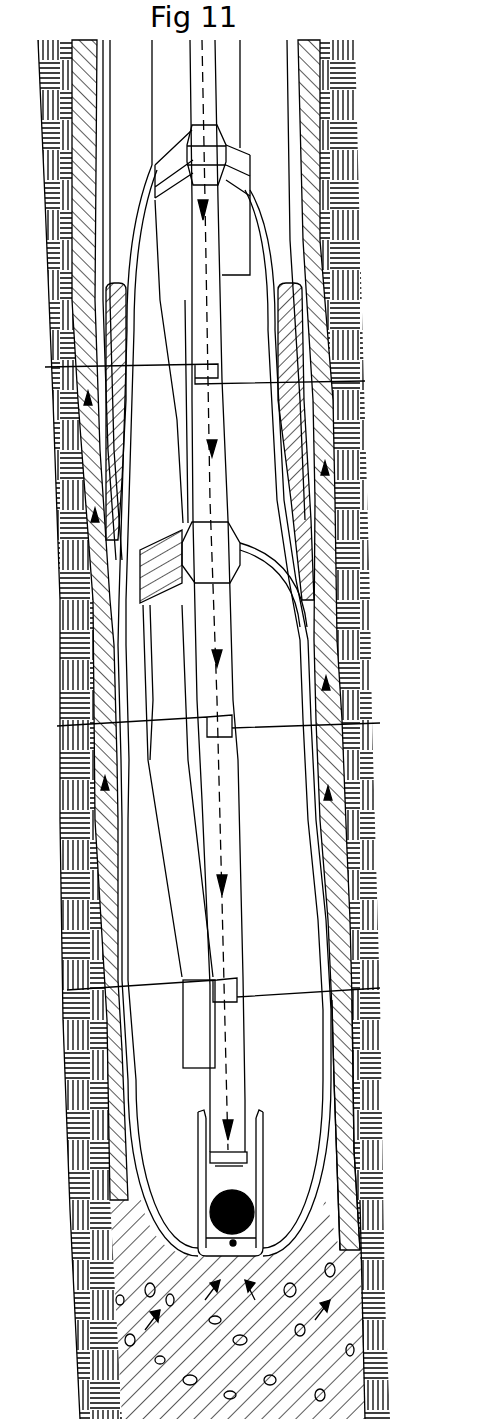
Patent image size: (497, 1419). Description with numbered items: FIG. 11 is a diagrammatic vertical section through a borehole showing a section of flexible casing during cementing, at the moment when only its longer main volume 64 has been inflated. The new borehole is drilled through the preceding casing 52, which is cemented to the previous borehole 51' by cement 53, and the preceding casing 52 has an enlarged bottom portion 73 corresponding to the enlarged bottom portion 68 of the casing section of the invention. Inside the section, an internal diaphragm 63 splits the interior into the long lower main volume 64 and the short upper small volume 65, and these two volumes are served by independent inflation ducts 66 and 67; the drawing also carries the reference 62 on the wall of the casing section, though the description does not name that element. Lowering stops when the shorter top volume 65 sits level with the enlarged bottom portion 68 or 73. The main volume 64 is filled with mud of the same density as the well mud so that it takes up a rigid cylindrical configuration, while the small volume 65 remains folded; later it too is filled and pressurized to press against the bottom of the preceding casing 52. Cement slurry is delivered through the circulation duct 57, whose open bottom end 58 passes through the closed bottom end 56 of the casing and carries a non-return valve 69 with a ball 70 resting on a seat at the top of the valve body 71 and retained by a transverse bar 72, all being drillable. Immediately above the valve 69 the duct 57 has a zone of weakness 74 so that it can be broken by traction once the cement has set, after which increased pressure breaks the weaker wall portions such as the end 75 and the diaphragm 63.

The preceding casing 52 is at (300, 90).
The inflation duct 67 is at (240, 110).
The end 75 is at (250, 195).
The previous borehole 51' is at (267, 729).
The circulation duct 57 is at (218, 297).
The enlarged bottom portion 73 is at (313, 347).
The cement 53 is at (330, 440).
The inflation duct 66 is at (160, 495).
The small volume 65 is at (277, 545).
The internal diaphragm 63 is at (282, 573).
The outer tube 62 is at (345, 660).
The main volume 64 is at (287, 892).
The enlarged bottom portion 68 is at (333, 930).
The zone of weakness 74 is at (247, 1110).
The valve body 71 is at (260, 1153).
The ball 70 is at (247, 1167).
The non-return valve 69 is at (255, 1205).
The transverse bar 72 is at (262, 1250).
The bottom end 56 is at (250, 1300).
The open bottom end 58 is at (260, 1320).